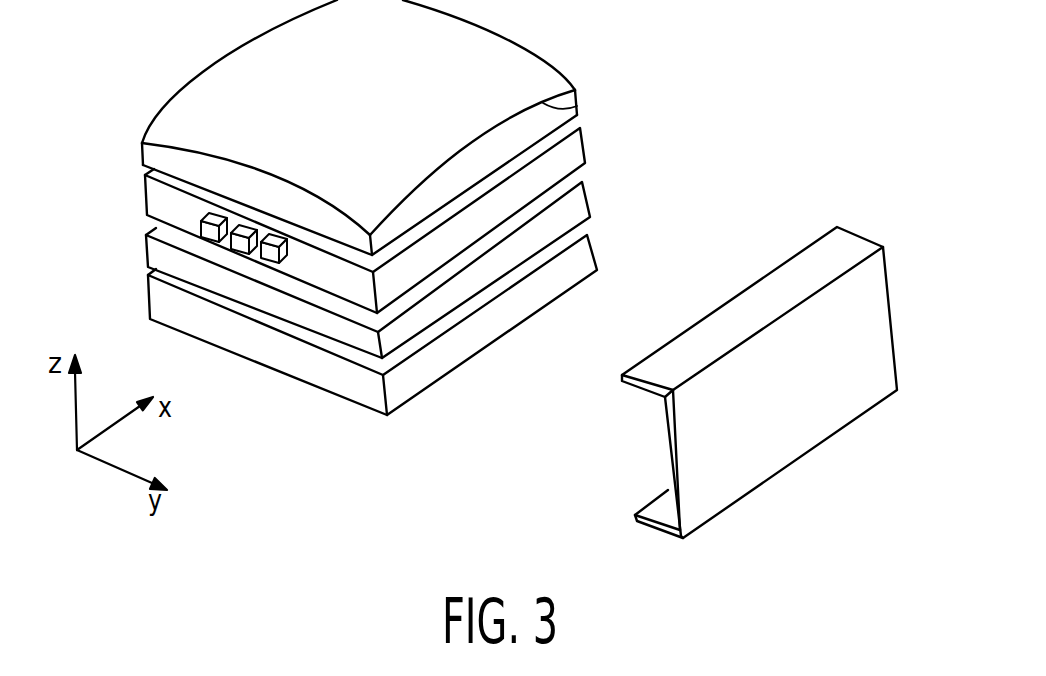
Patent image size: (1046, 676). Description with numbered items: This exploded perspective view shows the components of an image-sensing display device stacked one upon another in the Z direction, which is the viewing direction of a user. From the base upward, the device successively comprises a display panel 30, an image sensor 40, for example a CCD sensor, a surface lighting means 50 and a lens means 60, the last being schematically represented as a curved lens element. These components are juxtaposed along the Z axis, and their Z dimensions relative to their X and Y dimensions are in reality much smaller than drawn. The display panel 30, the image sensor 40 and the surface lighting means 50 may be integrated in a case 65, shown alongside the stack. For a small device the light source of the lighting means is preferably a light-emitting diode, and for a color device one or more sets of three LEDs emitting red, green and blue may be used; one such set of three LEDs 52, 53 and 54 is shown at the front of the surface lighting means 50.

The lens means 60 is at (577, 106).
The surface lighting means 50 is at (150, 198).
The image sensor 40 is at (150, 251).
The display panel 30 is at (152, 298).
The LED 52 is at (210, 241).
The LED 53 is at (238, 253).
The LED 54 is at (268, 262).
The case 65 is at (868, 320).